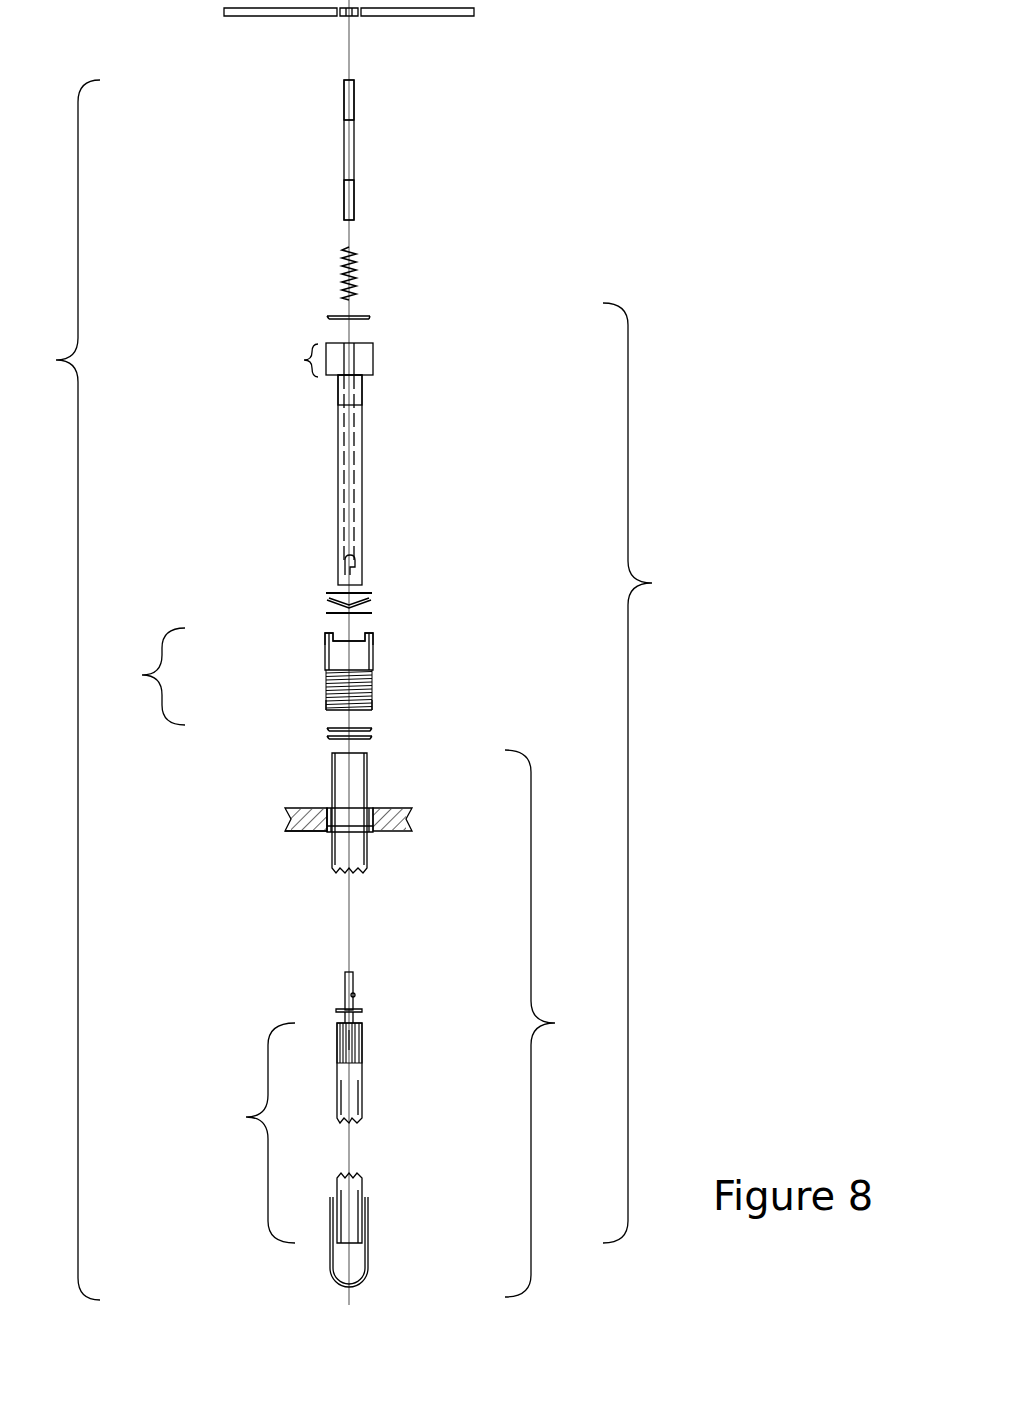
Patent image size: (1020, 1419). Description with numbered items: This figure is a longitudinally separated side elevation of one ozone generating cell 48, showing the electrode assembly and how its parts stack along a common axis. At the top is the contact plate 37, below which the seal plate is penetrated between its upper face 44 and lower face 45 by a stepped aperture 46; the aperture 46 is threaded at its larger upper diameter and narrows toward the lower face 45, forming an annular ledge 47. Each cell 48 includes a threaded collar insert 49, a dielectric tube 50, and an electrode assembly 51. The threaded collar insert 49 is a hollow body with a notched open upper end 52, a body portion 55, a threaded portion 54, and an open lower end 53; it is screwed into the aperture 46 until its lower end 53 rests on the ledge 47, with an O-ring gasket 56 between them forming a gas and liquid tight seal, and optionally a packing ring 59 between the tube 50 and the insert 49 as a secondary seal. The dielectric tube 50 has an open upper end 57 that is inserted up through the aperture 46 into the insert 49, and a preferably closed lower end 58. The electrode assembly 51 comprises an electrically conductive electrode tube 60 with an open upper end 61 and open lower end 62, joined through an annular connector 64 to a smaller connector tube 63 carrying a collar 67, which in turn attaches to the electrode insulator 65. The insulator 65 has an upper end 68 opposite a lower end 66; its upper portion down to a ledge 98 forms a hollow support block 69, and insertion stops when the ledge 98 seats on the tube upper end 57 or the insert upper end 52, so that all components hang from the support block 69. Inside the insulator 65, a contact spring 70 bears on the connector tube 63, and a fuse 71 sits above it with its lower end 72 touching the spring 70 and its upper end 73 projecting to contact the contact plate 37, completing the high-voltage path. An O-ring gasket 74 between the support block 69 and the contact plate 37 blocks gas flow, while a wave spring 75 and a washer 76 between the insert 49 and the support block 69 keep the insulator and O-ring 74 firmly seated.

The contact plate 37 is at (421, 14).
The fuse 71 is at (357, 150).
The upper end of fuse 73 is at (343, 78).
The lower end of fuse 72 is at (345, 222).
The contact spring 70 is at (357, 272).
The O-ring gasket 74 is at (372, 319).
The upper end of electrode insulator 68 is at (327, 342).
The hollow support block 69 is at (285, 361).
The electrode insulator 65 is at (363, 397).
The ledge 98 is at (362, 379).
The lower end of electrode insulator 66 is at (358, 555).
The washer 76 is at (322, 604).
The wave spring 75 is at (374, 599).
The nut 55 is at (375, 653).
The upper end of threaded collar insert 52 is at (327, 631).
The threaded portion 54 is at (325, 690).
The lower end of threaded collar insert 53 is at (324, 713).
The threaded collar insert 49 is at (137, 676).
The packing ring 59 is at (373, 727).
The O-ring gasket 56 is at (373, 735).
The upper end of dielectric tube 57 is at (370, 751).
The upper face 44 is at (311, 806).
The aperture 46 is at (353, 806).
The lower face 45 is at (302, 833).
The annular ledge 47 is at (324, 833).
The connector tube 63 is at (354, 968).
The collar 67 is at (365, 1005).
The annular connector 64 is at (363, 1055).
The upper end of electrode tube 61 is at (335, 1020).
The electrode tube 60 is at (245, 1133).
The lower end of electrode tube 62 is at (352, 1238).
The lower end of dielectric tube 58 is at (370, 1257).
The ozone generating cell 48 is at (52, 690).
The electrode assembly 51 is at (663, 773).
The dielectric tube 50 is at (560, 1023).